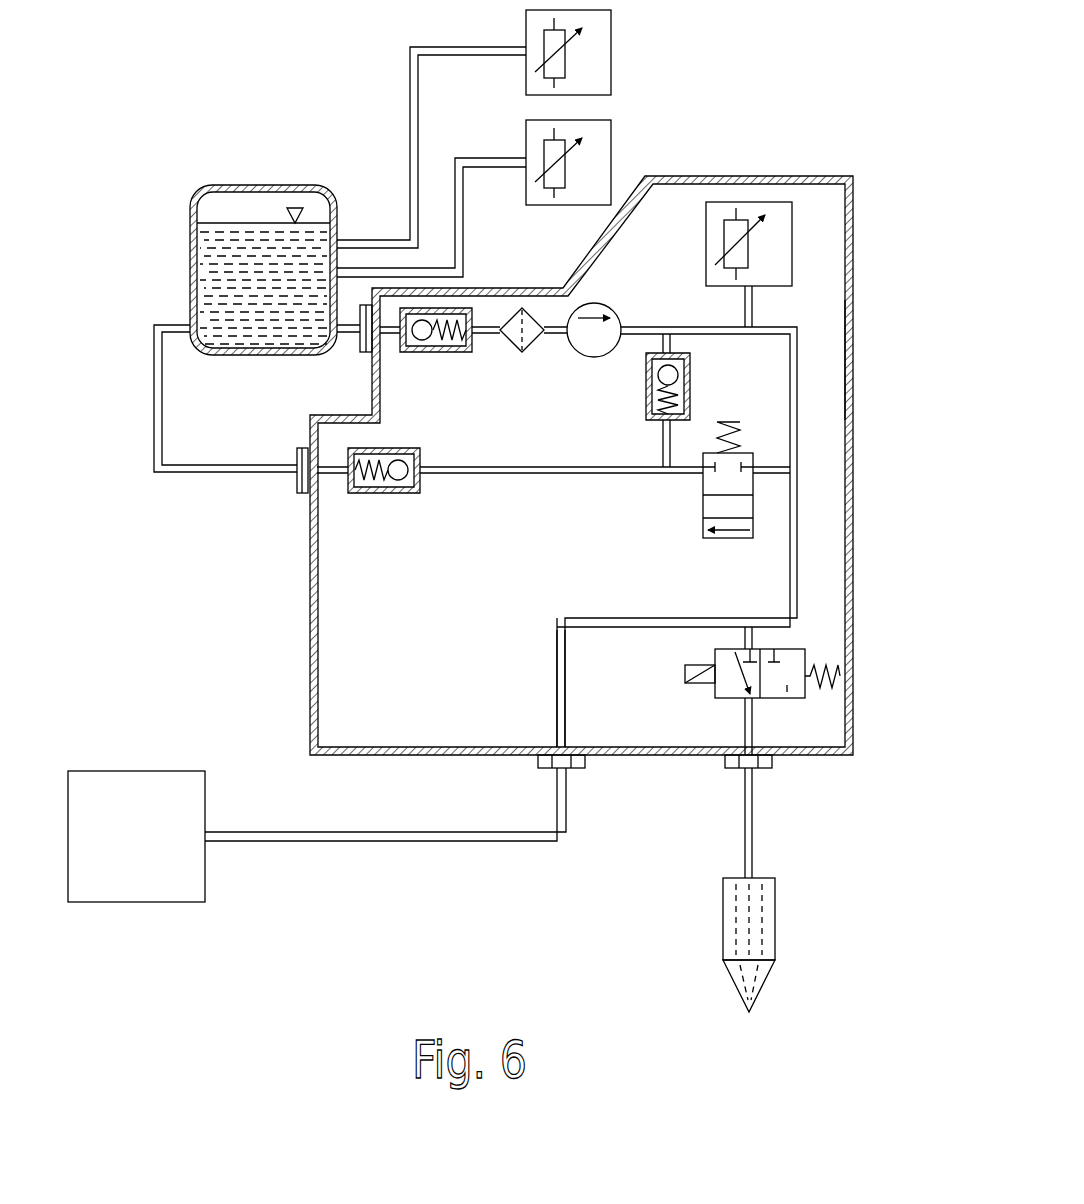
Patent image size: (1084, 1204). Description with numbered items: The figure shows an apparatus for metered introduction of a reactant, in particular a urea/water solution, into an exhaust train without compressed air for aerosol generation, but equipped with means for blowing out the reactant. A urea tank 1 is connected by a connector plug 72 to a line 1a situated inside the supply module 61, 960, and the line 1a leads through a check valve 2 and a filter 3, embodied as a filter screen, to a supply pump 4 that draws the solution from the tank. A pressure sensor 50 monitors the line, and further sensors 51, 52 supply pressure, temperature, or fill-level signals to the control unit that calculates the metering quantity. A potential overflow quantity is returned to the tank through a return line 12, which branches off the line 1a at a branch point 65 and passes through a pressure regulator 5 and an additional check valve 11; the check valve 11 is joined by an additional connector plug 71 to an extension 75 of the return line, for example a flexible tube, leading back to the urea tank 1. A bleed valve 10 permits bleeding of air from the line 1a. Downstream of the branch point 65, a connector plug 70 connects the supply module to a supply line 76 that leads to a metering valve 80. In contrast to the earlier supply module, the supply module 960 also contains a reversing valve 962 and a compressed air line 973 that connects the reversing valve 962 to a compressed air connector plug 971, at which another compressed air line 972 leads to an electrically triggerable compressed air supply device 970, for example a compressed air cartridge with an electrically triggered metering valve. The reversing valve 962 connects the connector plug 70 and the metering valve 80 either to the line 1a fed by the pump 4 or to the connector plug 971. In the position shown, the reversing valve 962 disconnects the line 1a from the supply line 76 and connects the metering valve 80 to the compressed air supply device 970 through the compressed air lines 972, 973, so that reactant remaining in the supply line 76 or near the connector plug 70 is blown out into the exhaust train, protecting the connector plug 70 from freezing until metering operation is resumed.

The urea tank 1 is at (268, 186).
The line 1a is at (677, 537).
The check valve 2 is at (445, 352).
The filter 3 is at (518, 350).
The supply pump 4 is at (596, 352).
The pressure regulator 5 is at (651, 360).
The bleed valve 10 is at (708, 528).
The additional check valve 11 is at (393, 493).
The return line 12 is at (523, 475).
The pressure sensor 50 is at (706, 240).
The sensor 51 is at (598, 145).
The sensor 52 is at (598, 42).
The supply module 61 is at (825, 343).
The branch point 65 is at (795, 476).
The connector plug 70 is at (758, 762).
The additional connector plug 71 is at (303, 488).
The connector plug 72 is at (362, 338).
The extension of the return line 75 is at (198, 475).
The supply line 76 is at (750, 852).
The metering valve 80 is at (763, 935).
The supply module 960 is at (853, 188).
The reversing valve 962 is at (802, 660).
The compressed air supply device 970 is at (162, 868).
The compressed air connector plug 971 is at (572, 766).
The compressed air line 972 is at (470, 840).
The compressed air line 973 is at (557, 676).